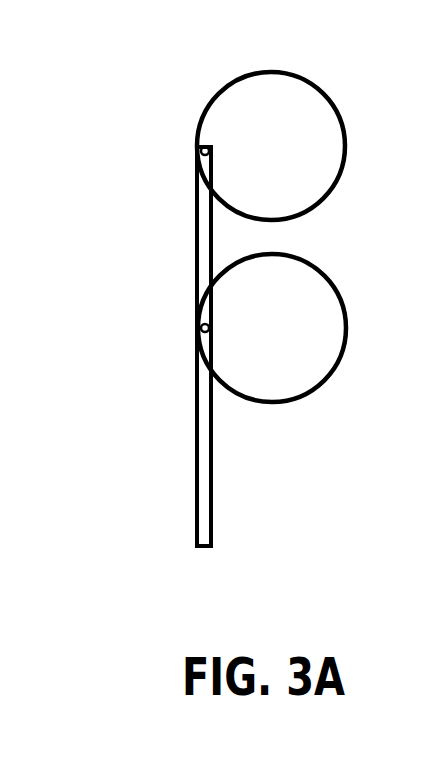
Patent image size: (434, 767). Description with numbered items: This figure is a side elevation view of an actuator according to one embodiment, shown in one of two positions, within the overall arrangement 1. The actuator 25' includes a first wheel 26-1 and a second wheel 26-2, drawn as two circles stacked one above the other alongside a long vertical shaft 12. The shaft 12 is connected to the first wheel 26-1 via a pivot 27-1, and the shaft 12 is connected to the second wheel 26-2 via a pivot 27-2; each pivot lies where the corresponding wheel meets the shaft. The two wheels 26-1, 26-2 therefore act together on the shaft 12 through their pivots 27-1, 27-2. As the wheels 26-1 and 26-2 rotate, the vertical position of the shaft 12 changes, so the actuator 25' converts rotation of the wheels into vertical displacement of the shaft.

The assembly 1 is at (135, 68).
The actuator 25' is at (114, 222).
The shaft 12 is at (195, 403).
The first wheel 26-1 is at (272, 72).
The second wheel 26-2 is at (290, 255).
The pivot 27-1 is at (200, 147).
The pivot 27-2 is at (199, 326).